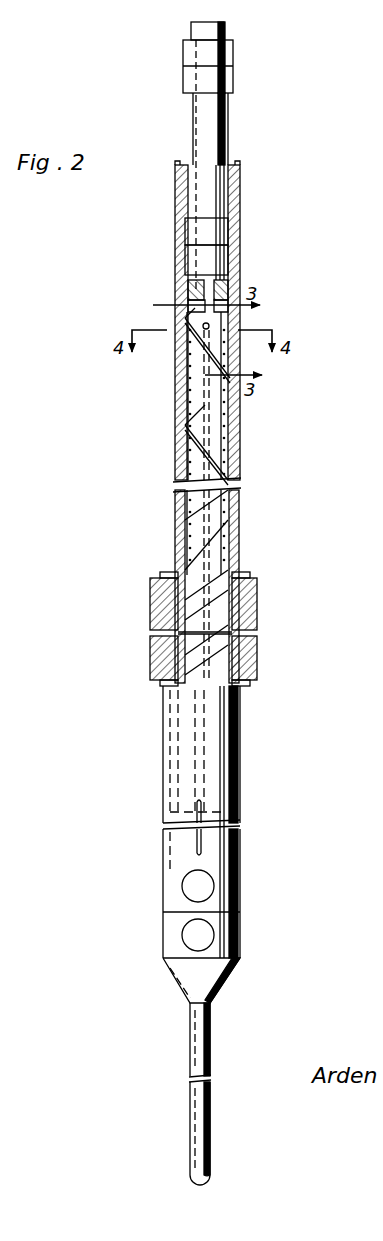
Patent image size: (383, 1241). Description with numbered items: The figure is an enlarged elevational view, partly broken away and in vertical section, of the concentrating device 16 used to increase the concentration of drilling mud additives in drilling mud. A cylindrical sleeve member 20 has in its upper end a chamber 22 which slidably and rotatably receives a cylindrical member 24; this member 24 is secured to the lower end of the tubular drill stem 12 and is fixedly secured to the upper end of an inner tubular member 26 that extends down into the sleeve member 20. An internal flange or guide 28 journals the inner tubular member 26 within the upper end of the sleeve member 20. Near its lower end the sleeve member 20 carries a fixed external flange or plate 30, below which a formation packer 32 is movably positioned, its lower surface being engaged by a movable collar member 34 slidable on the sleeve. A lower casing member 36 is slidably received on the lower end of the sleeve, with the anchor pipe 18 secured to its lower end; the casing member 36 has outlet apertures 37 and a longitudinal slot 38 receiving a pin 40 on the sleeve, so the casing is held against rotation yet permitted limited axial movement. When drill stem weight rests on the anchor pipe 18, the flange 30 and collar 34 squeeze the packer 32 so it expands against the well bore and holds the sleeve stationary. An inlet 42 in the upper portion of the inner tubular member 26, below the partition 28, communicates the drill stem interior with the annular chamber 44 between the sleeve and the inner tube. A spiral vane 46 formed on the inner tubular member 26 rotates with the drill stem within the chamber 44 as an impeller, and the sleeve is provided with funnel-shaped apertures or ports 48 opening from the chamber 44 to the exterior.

The tubular drill stem 12 is at (212, 28).
The concentrating device 16 is at (250, 511).
The anchor pipe 18 is at (199, 1051).
The sleeve member 20 is at (237, 266).
The chamber 22 is at (233, 225).
The cylindrical member 24 is at (205, 234).
The inner tubular member 26 is at (210, 399).
The internal flange or guide 28 is at (186, 289).
The external flange or plate 30 is at (238, 575).
The formation packer 32 is at (258, 595).
The movable collar member 34 is at (238, 686).
The lower casing member 36 is at (238, 889).
The outlet apertures 37 is at (198, 935).
The longitudinal slot 38 is at (204, 836).
The pin 40 is at (203, 804).
The inlet 42 is at (210, 327).
The annular chamber 44 is at (195, 306).
The spiral vane 46 is at (186, 437).
The apertures or ports 48 is at (235, 446).